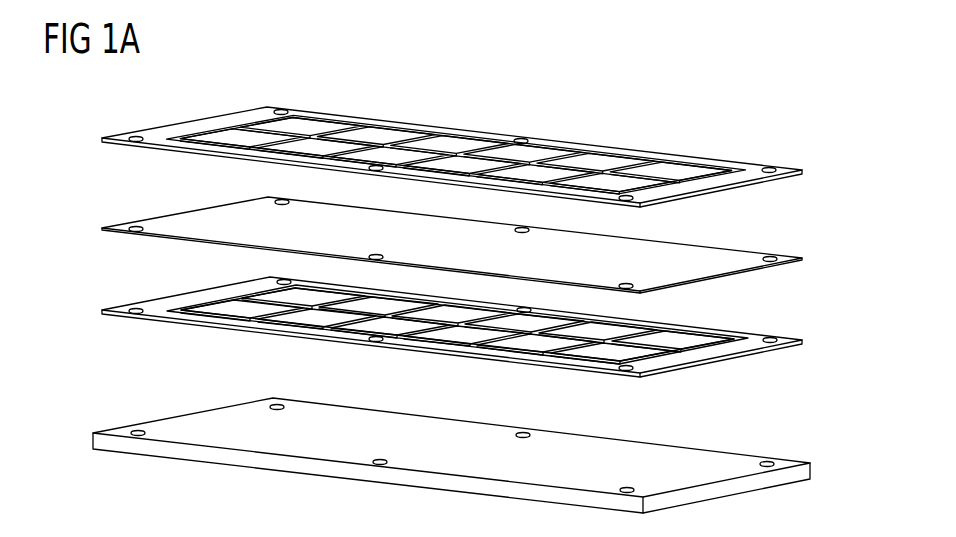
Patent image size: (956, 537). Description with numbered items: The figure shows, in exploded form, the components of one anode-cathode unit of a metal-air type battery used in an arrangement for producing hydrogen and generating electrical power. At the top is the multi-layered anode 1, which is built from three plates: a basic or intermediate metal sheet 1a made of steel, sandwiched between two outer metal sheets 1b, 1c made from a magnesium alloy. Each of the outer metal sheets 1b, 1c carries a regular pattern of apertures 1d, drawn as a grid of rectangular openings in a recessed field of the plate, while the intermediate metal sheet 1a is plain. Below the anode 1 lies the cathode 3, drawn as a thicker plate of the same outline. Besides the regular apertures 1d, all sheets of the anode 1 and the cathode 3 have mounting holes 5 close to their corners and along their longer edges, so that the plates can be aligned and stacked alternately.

The multi-layered anode 1 is at (91, 135).
The intermediate metal sheet 1a is at (147, 227).
The outer metal sheet 1b is at (152, 137).
The outer metal sheet 1c is at (150, 305).
The apertures 1d is at (315, 125).
The cathode 3 is at (152, 427).
The mounting holes 5 is at (765, 163).